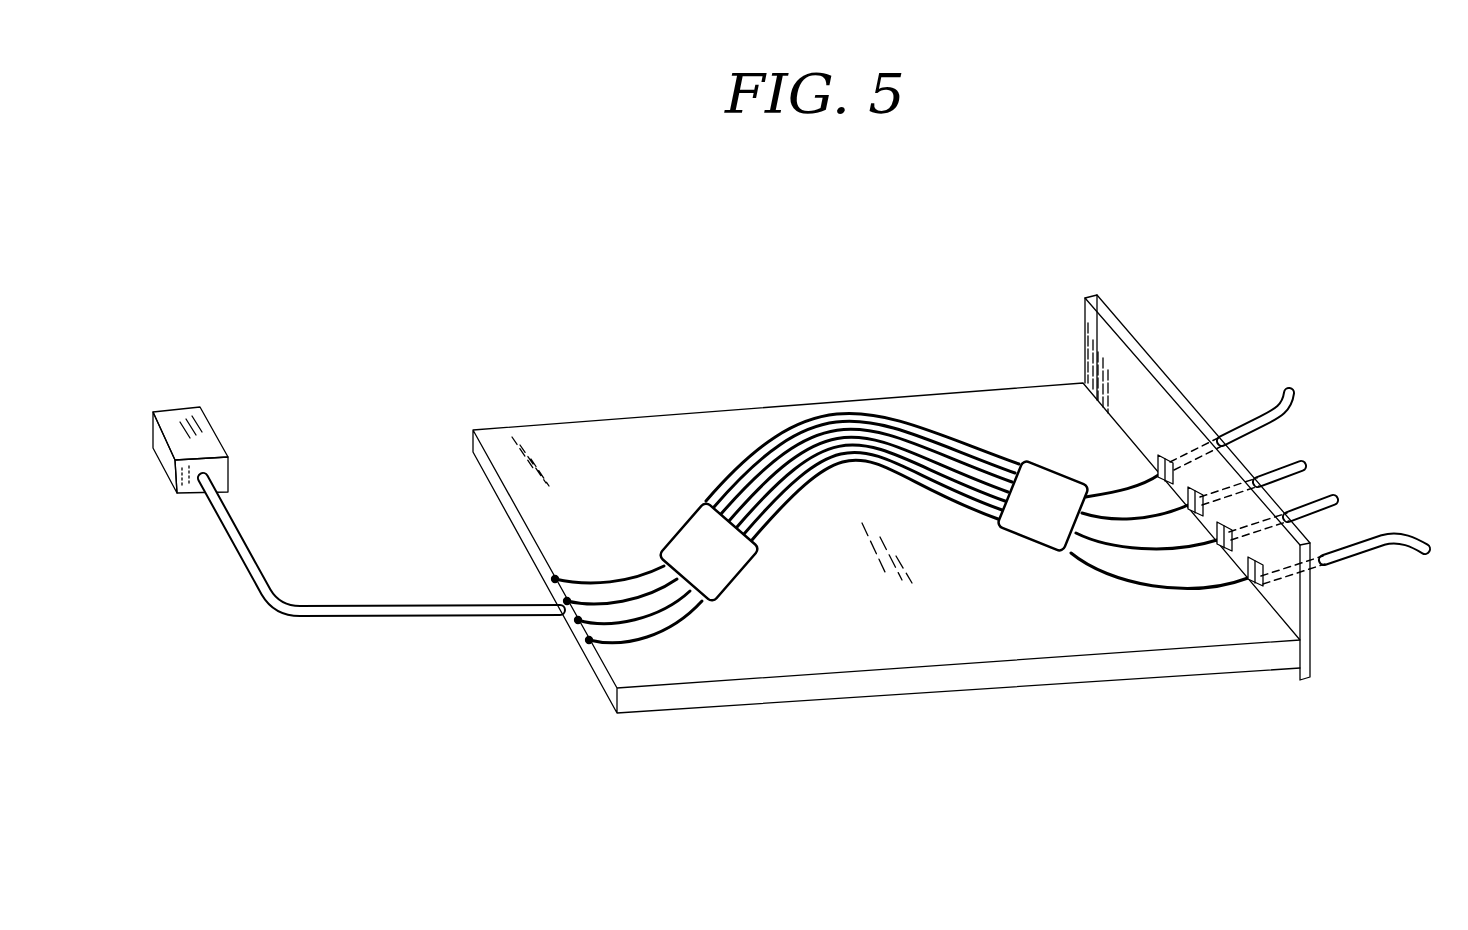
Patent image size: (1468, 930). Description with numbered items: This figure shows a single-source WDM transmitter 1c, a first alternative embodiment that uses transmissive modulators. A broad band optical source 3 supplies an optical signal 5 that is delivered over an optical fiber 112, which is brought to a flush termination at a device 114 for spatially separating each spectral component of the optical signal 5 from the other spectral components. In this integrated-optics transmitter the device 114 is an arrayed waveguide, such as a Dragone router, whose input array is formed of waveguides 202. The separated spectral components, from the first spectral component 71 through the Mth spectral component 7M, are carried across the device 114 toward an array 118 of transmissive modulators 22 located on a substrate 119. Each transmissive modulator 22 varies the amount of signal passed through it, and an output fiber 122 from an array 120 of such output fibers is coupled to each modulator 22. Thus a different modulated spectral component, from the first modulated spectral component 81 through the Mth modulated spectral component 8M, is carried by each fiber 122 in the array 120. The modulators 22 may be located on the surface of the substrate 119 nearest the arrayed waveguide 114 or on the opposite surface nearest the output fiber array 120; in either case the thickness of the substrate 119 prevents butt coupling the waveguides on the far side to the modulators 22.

The transmitter 1c is at (968, 433).
The broad band optical source 3 is at (200, 428).
The optical signal 5 is at (264, 532).
The optical fiber 112 is at (385, 606).
The device for spatially separating spectral components 114 is at (630, 433).
The waveguides 202 is at (593, 582).
The spectral component 71 is at (1131, 478).
The spectral component 7M is at (1158, 605).
The transmissive modulator 22 is at (1160, 455).
The array of transmissive modulators 118 is at (1097, 343).
The substrate 119 is at (1136, 428).
The array of output fibers 120 is at (1316, 464).
The output fiber 122 is at (1248, 418).
The modulated spectral component 81 is at (1275, 374).
The modulated spectral component 8M is at (1343, 589).